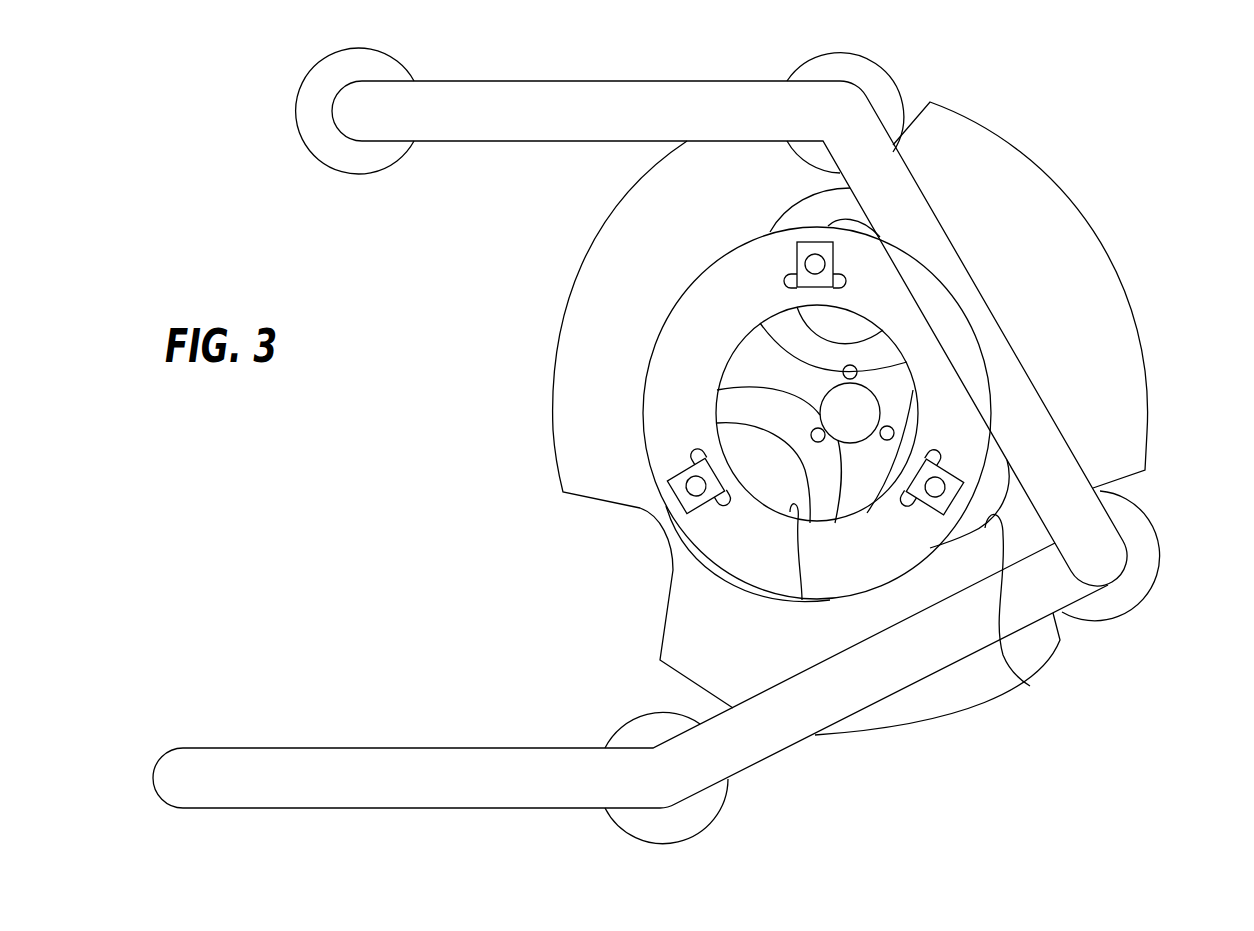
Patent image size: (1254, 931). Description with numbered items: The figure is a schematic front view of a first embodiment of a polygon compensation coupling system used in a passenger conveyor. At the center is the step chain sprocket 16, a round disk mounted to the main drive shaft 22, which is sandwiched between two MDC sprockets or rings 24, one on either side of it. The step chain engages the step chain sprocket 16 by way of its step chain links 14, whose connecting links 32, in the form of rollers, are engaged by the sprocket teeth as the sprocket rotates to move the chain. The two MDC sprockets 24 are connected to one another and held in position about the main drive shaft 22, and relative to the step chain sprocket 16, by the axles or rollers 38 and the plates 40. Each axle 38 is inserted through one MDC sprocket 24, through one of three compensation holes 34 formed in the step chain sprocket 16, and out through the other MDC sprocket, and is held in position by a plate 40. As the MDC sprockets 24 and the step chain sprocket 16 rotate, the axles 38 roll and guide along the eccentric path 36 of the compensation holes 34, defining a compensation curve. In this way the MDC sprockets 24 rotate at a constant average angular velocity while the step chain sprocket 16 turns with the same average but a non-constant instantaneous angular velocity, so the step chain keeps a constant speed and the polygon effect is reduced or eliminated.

The step chain link 14 is at (533, 107).
The step chain sprocket 16 is at (1026, 146).
The main drive shaft 22 is at (837, 428).
The MDC sprocket 24 is at (952, 308).
The connecting link 32 is at (357, 152).
The compensation hole 34 is at (820, 210).
The eccentric path 36 is at (847, 340).
The axle 38 is at (810, 263).
The plate 40 is at (834, 252).